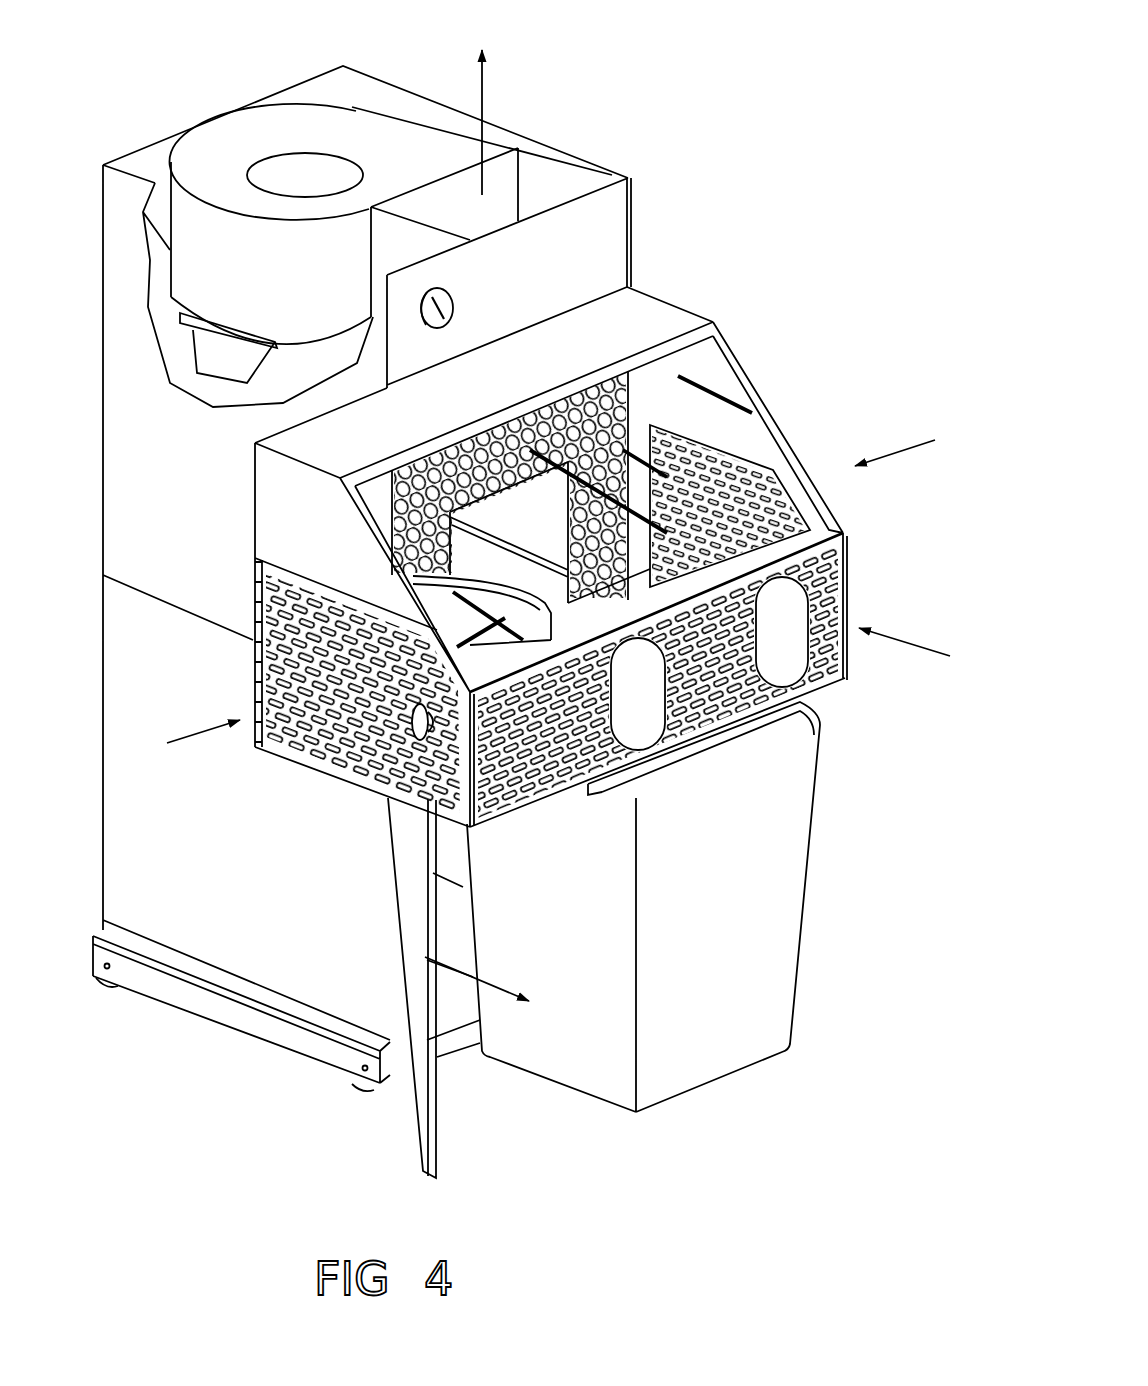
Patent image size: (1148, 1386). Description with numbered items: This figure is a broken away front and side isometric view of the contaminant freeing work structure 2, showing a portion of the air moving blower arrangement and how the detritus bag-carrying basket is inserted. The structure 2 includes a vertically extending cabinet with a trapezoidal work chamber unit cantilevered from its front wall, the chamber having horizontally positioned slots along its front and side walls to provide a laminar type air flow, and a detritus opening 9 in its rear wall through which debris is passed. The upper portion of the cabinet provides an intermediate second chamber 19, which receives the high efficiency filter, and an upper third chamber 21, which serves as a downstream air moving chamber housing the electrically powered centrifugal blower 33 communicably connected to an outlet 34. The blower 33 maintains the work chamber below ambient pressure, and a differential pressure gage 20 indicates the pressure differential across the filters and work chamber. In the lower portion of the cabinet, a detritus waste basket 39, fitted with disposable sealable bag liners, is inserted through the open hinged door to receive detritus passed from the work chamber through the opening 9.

The contaminant freeing work structure 2 is at (745, 207).
The detritus opening 9 is at (489, 510).
The intermediate second chamber 19 is at (556, 531).
The differential pressure gage 20 is at (454, 299).
The upper third chamber 21 is at (525, 123).
The centrifugal blower 33 is at (430, 163).
The outlet 34 is at (562, 185).
The detritus waste basket 39 is at (643, 907).